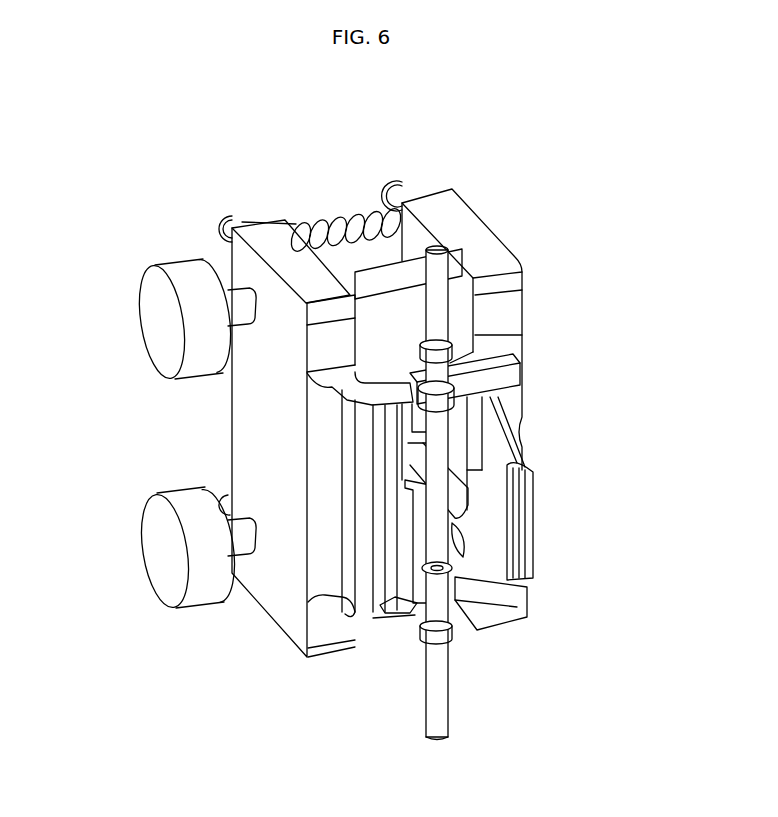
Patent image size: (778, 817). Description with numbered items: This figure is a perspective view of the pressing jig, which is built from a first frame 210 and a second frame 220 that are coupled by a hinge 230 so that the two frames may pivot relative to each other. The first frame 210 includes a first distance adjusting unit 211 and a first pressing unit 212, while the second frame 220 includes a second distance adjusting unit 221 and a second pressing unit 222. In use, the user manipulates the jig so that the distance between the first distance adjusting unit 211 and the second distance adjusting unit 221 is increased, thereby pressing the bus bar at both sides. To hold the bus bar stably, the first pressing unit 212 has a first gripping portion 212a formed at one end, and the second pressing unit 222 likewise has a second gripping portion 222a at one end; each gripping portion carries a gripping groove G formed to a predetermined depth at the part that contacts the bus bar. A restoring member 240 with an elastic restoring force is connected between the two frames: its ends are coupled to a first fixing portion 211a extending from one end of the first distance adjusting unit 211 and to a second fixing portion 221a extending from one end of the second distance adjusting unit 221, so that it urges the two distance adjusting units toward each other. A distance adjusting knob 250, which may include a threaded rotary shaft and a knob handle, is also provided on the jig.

The first frame 210 is at (600, 232).
The first distance adjusting unit 211 is at (483, 243).
The first fixing portion 211a is at (396, 184).
The first pressing unit 212 is at (513, 412).
The first gripping portion 212a is at (536, 520).
The second frame 220 is at (348, 725).
The second distance adjusting unit 221 is at (273, 603).
The second fixing portion 221a is at (227, 217).
The second pressing unit 222 is at (357, 623).
The second gripping portion 222a is at (397, 620).
The hinge 230 is at (440, 702).
The restoring member 240 is at (343, 209).
The distance adjusting knob 250 is at (163, 322).
The gripping groove G is at (535, 580).